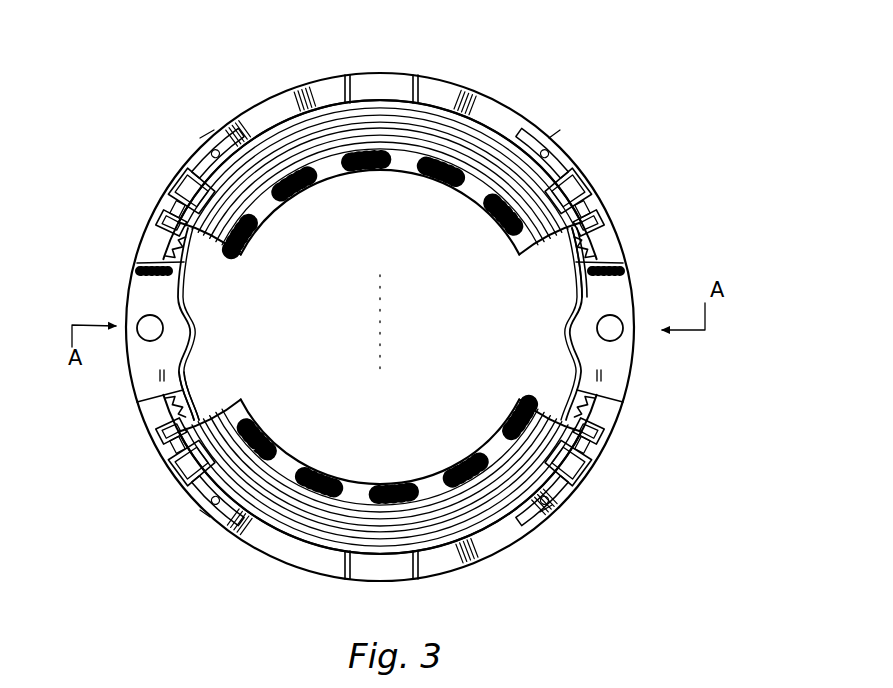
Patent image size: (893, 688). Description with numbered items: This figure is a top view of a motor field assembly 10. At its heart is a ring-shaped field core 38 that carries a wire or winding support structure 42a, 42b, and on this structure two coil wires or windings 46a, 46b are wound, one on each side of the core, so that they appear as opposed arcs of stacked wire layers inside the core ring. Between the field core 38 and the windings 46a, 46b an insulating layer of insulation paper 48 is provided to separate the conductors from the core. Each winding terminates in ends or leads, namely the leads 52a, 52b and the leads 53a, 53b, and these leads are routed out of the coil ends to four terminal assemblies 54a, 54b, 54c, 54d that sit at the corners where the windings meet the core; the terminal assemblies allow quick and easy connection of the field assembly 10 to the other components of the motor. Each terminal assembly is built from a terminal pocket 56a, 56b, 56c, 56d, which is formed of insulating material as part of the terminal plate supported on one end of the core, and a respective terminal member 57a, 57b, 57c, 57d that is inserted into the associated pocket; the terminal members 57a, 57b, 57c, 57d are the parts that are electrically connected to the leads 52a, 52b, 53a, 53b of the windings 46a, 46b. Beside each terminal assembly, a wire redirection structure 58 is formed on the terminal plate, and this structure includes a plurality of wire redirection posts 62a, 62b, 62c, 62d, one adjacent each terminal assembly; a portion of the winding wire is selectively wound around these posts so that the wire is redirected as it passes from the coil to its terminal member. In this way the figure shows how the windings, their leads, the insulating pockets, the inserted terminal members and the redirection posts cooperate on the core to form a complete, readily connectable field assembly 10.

The field assembly 10 is at (704, 68).
The field core 38 is at (500, 100).
The wire or winding support structure 42a is at (390, 486).
The wire or winding support structure 42b is at (437, 167).
The coil wire or winding 46a is at (230, 400).
The coil wire or winding 46b is at (535, 256).
The insulation paper 48 is at (567, 332).
The lead of winding 52a is at (201, 408).
The lead of winding 52b is at (567, 250).
The lead of winding 53a is at (558, 415).
The lead of winding 53b is at (205, 248).
The terminal assembly 54a is at (160, 438).
The terminal assembly 54b is at (613, 438).
The terminal assembly 54c is at (618, 220).
The terminal assembly 54d is at (172, 175).
The terminal pocket 56a is at (173, 413).
The terminal pocket 56b is at (583, 395).
The terminal pocket 56c is at (600, 238).
The terminal pocket 56d is at (186, 250).
The terminal member 57a is at (187, 465).
The terminal member 57b is at (595, 462).
The terminal member 57c is at (582, 197).
The terminal member 57d is at (196, 224).
The wire redirection structure 58 is at (202, 131).
The wire redirection post 62a is at (219, 499).
The wire redirection post 62b is at (552, 495).
The wire redirection post 62c is at (555, 154).
The wire redirection post 62d is at (228, 148).